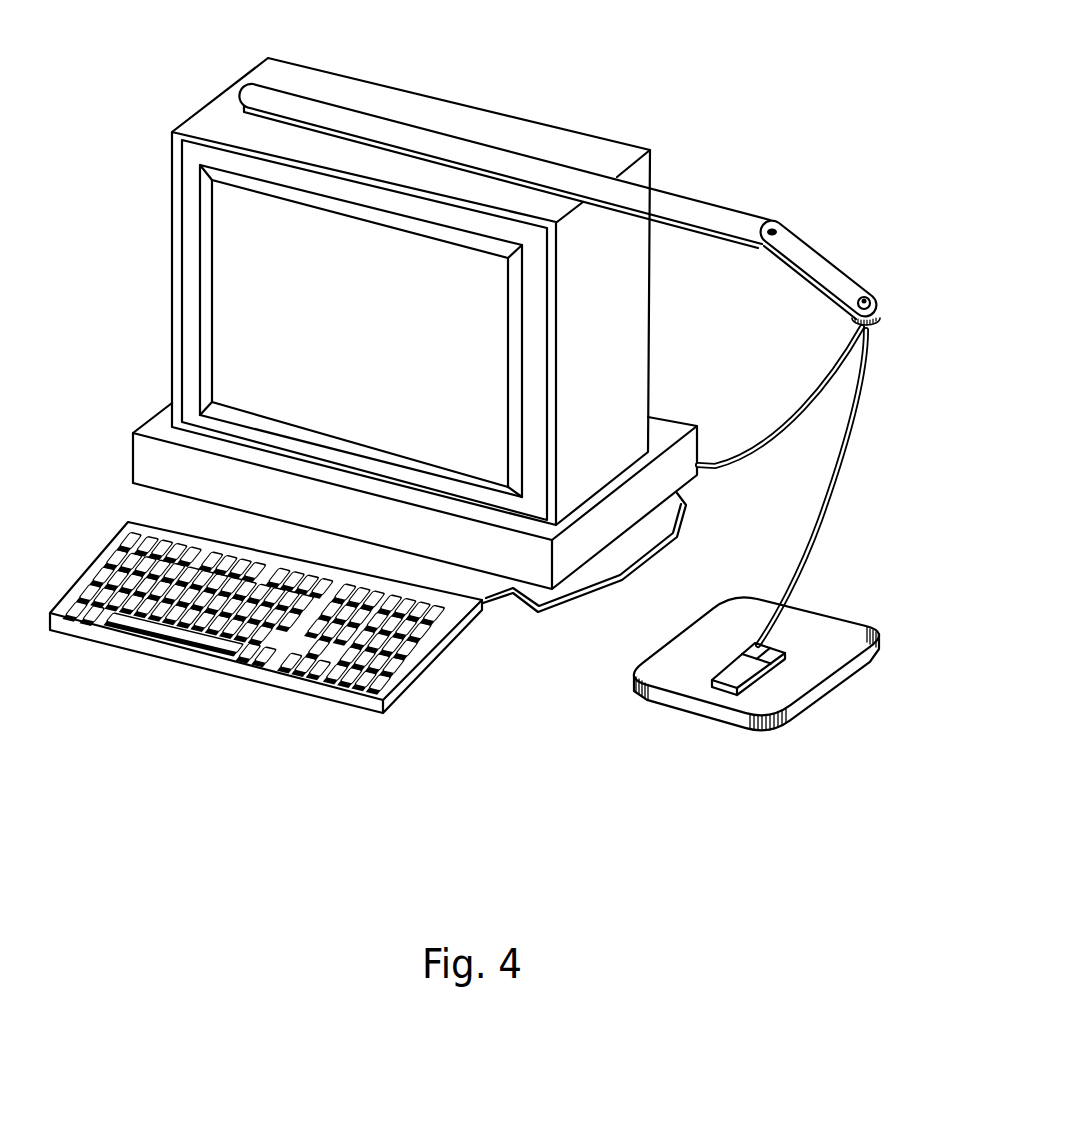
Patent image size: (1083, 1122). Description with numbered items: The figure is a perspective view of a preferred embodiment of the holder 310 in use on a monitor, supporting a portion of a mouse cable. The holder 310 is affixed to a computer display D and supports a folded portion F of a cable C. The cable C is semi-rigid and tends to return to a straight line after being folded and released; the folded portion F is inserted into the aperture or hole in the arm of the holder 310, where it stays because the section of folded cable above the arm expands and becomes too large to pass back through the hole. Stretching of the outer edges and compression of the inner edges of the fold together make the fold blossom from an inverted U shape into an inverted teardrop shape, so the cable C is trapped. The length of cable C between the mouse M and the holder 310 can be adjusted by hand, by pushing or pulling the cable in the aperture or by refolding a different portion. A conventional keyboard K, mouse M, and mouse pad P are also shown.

The holder 310 is at (737, 165).
The folded portion F is at (872, 278).
The computer display D is at (662, 329).
The cable C is at (848, 502).
The mouse M is at (795, 645).
The mouse pad P is at (608, 692).
The keyboard K is at (215, 692).